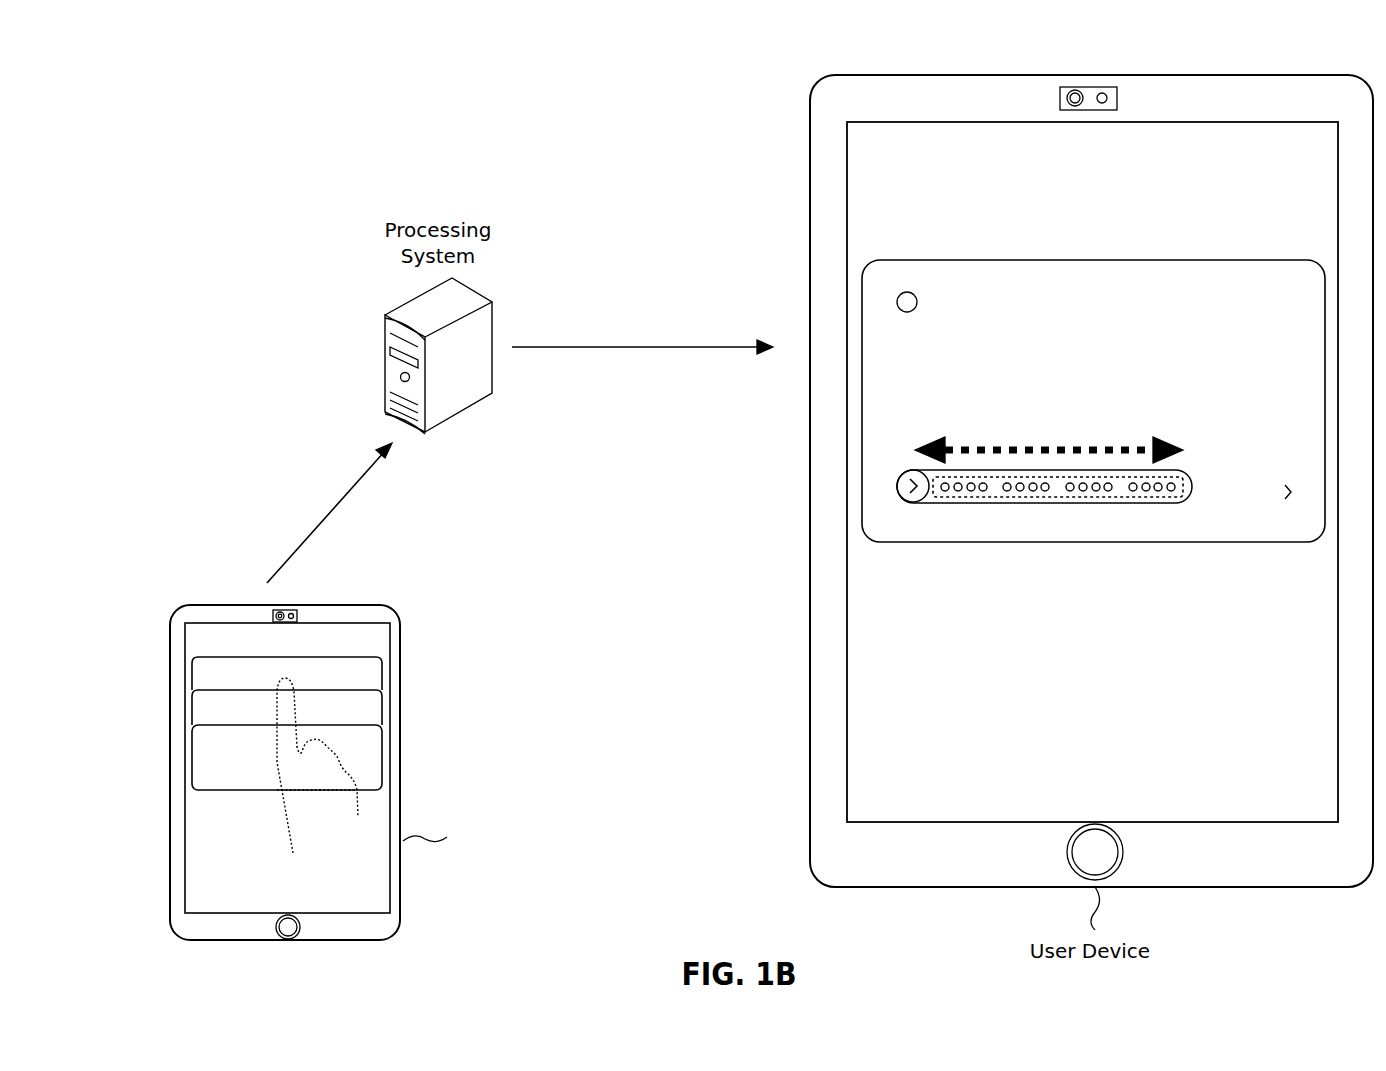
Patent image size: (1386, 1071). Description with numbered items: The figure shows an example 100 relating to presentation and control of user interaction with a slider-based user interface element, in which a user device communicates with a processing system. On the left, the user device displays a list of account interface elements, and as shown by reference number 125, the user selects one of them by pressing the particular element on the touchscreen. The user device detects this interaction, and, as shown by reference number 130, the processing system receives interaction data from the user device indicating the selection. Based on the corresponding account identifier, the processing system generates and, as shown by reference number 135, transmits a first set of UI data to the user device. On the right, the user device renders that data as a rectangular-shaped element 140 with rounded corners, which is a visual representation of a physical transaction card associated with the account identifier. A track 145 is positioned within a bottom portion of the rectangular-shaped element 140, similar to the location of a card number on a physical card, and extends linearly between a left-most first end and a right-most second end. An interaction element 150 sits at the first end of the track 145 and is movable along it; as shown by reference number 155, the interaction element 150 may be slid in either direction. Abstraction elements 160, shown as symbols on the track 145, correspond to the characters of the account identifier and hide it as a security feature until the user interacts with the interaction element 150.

The example 100 is at (257, 93).
The selection of account interface element 125 is at (403, 748).
The interaction data 130 is at (313, 511).
The first set of UI data 135 is at (642, 306).
The rectangular-shaped element 140 is at (1065, 260).
The track 145 is at (1143, 503).
The interaction element 150 is at (920, 500).
The slidable in either direction 155 is at (1034, 450).
The abstraction elements 160 is at (1032, 497).